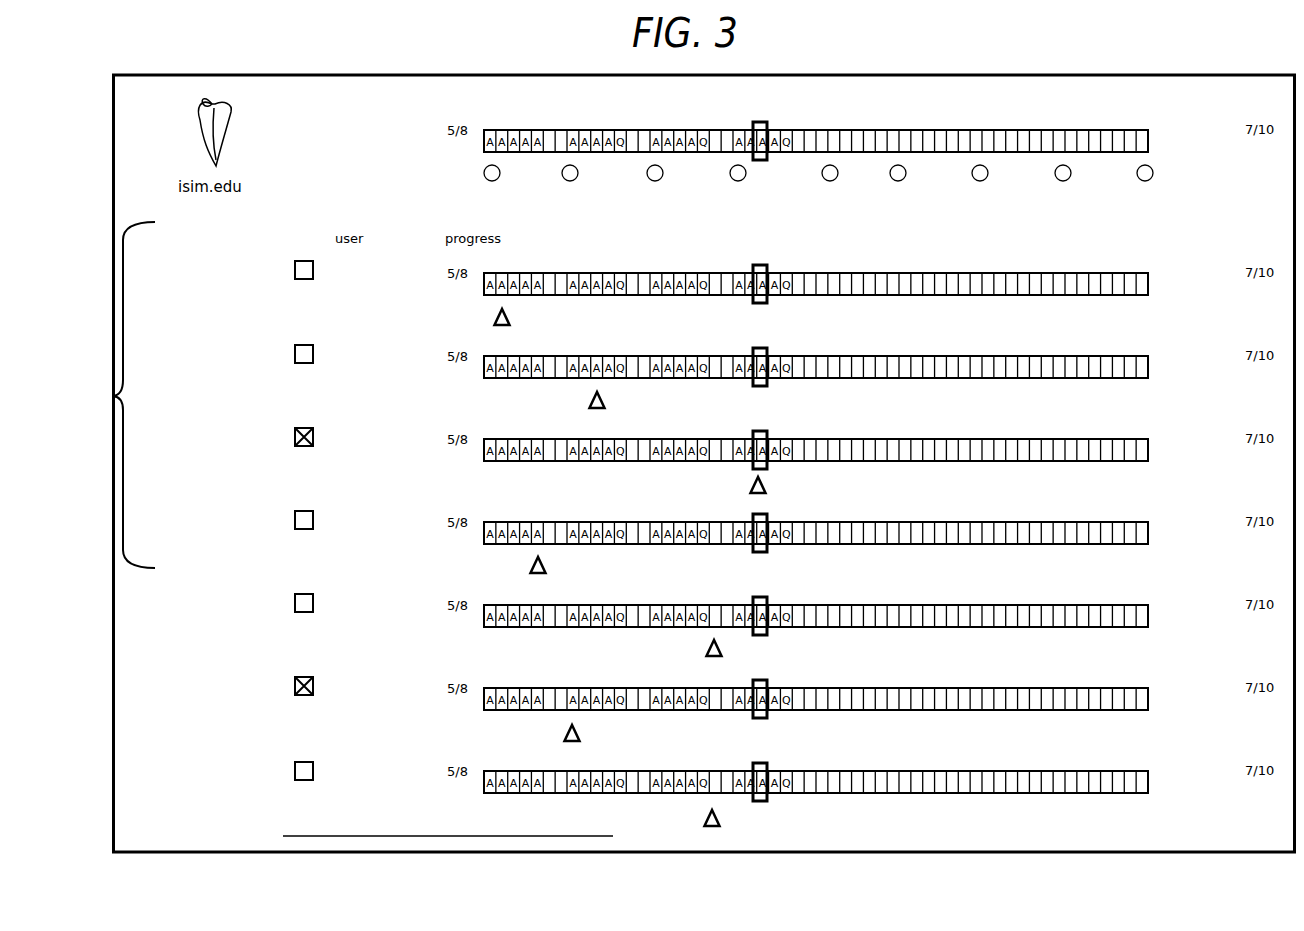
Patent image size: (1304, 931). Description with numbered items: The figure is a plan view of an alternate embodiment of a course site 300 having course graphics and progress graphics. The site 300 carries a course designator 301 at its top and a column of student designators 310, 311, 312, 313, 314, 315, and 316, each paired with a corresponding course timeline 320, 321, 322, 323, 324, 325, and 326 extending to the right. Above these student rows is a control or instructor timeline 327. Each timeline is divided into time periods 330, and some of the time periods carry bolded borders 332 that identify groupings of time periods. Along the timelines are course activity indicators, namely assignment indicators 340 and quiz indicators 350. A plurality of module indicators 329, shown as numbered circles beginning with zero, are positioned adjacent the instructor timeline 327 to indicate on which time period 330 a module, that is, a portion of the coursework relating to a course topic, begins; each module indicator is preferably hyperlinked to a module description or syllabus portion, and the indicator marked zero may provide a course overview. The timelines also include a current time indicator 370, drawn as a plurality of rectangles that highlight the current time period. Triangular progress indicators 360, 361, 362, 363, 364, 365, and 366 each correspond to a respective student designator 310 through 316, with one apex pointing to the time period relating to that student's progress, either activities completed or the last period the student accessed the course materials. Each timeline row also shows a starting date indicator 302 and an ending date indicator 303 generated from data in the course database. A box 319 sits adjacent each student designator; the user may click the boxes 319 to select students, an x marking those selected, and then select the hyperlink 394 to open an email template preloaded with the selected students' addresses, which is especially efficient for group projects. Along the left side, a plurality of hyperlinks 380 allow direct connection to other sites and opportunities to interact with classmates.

The course site 300 is at (1290, 101).
The course designator 301 is at (712, 108).
The starting date indicator 302 is at (468, 272).
The ending date indicator 303 is at (1270, 266).
The student designator 310 is at (372, 275).
The student designator 311 is at (372, 358).
The student designator 312 is at (372, 441).
The student designator 313 is at (372, 524).
The student designator 314 is at (372, 607).
The student designator 315 is at (372, 690).
The student designator 316 is at (372, 773).
The box 319 is at (295, 688).
The course timeline 320 is at (1122, 273).
The course timeline 321 is at (1122, 356).
The course timeline 322 is at (1122, 439).
The course timeline 323 is at (1122, 522).
The course timeline 324 is at (1122, 605).
The course timeline 325 is at (1122, 688).
The course timeline 326 is at (1122, 771).
The control or instructor timeline 327 is at (1123, 130).
The module indicators 329 is at (492, 182).
The time periods 330 is at (532, 461).
The bolded borders 332 is at (500, 688).
The assignment indicators 340 is at (585, 273).
The quiz indicators 350 is at (700, 273).
The progress indicator 360 is at (510, 315).
The progress indicator 361 is at (605, 398).
The progress indicator 362 is at (766, 484).
The progress indicator 363 is at (546, 563).
The progress indicator 364 is at (706, 650).
The progress indicator 365 is at (580, 731).
The progress indicator 366 is at (720, 816).
The current time indicator 370 is at (766, 266).
The hyperlinks 380 is at (113, 396).
The hyperlink 394 is at (297, 824).